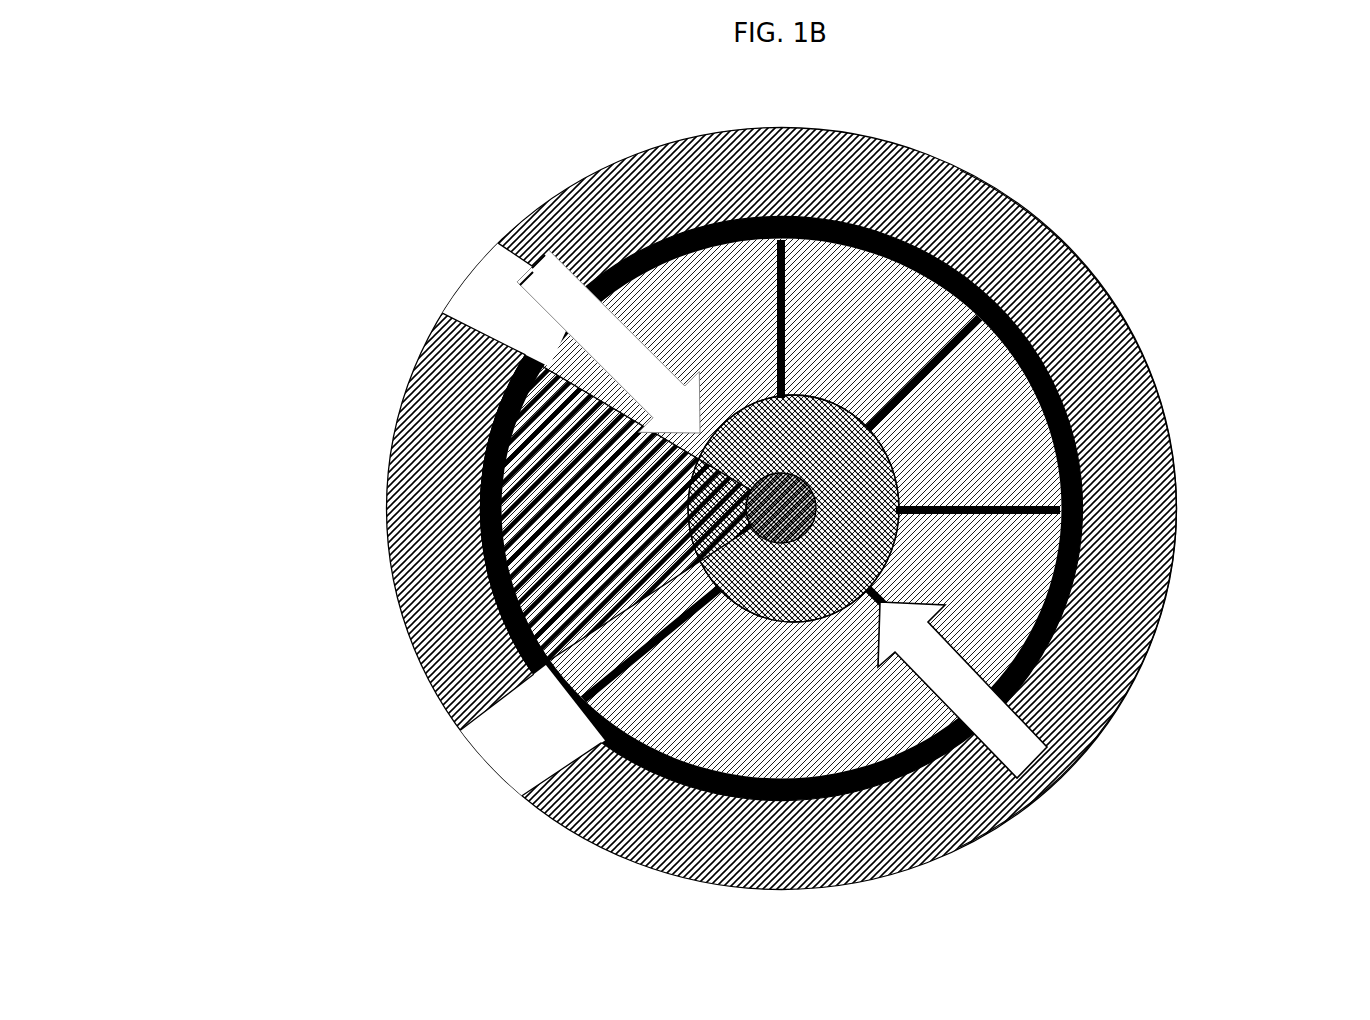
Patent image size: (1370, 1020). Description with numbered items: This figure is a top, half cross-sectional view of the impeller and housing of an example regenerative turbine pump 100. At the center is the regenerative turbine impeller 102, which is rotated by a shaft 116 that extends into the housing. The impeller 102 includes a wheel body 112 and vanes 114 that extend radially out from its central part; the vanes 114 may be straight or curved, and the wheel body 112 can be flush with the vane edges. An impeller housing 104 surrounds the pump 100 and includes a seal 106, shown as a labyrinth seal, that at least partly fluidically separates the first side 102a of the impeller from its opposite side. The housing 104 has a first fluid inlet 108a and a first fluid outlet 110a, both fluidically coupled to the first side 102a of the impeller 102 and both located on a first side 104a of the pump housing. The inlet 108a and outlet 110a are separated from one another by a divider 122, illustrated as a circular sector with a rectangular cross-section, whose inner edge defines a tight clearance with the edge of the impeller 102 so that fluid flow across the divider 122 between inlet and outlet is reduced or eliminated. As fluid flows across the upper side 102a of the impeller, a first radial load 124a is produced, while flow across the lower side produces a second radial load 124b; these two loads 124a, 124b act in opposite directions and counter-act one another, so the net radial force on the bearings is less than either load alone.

The regenerative turbine pump 100 is at (372, 200).
The regenerative turbine impeller 102 is at (760, 603).
The first side of the impeller 102a is at (893, 297).
The impeller housing 104 is at (385, 510).
The first side of the pump housing 104a is at (348, 577).
The seal 106 is at (1170, 425).
The first fluid inlet 108a is at (445, 262).
The first fluid outlet 110a is at (485, 768).
The wheel body 112 is at (1003, 462).
The vanes 114 is at (1148, 650).
The shaft 116 is at (625, 245).
The divider 122 is at (562, 531).
The first radial load 124a is at (1040, 778).
The second radial load 124b is at (515, 252).